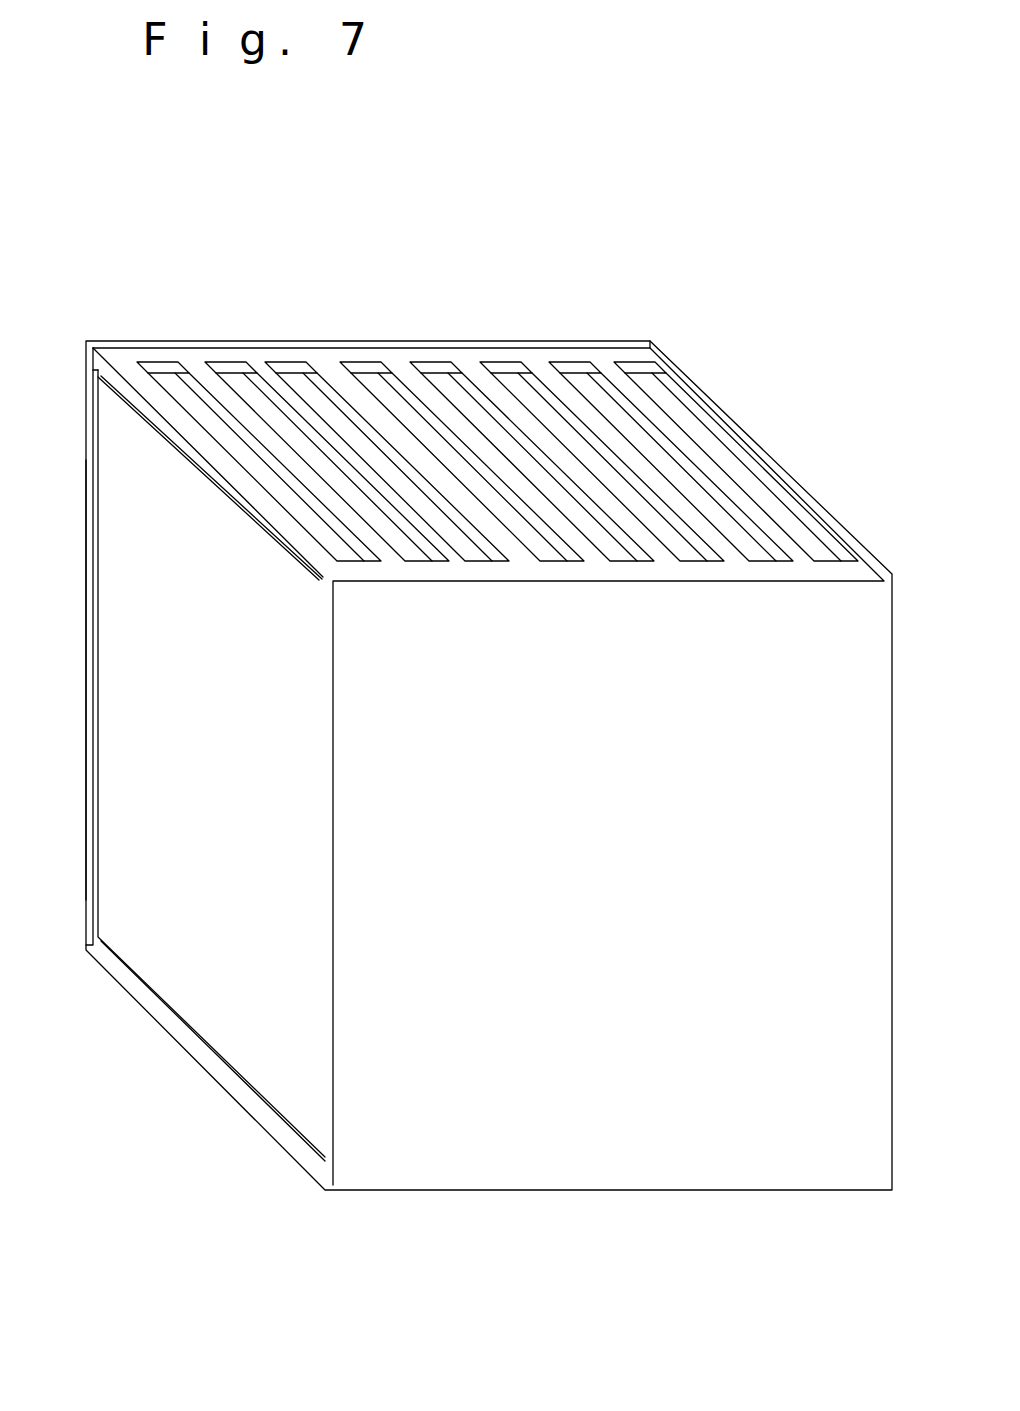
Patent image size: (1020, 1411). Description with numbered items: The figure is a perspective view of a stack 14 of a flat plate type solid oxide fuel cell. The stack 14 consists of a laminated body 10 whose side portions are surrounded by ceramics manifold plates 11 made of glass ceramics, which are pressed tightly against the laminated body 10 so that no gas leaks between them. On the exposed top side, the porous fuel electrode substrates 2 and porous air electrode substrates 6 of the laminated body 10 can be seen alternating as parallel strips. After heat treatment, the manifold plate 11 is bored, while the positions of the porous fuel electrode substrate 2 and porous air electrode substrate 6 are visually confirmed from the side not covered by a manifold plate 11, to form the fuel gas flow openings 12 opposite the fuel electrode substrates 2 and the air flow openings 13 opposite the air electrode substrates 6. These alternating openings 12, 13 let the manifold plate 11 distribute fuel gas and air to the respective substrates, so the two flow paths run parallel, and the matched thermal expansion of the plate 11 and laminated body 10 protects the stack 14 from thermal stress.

The porous fuel electrode substrate 2 is at (480, 487).
The porous air electrode substrate 6 is at (373, 452).
The laminated body 10 is at (147, 822).
The manifold plate 11 is at (163, 412).
The fuel gas flow opening 12 is at (250, 380).
The air flow opening 13 is at (182, 380).
The stack 14 is at (162, 1190).